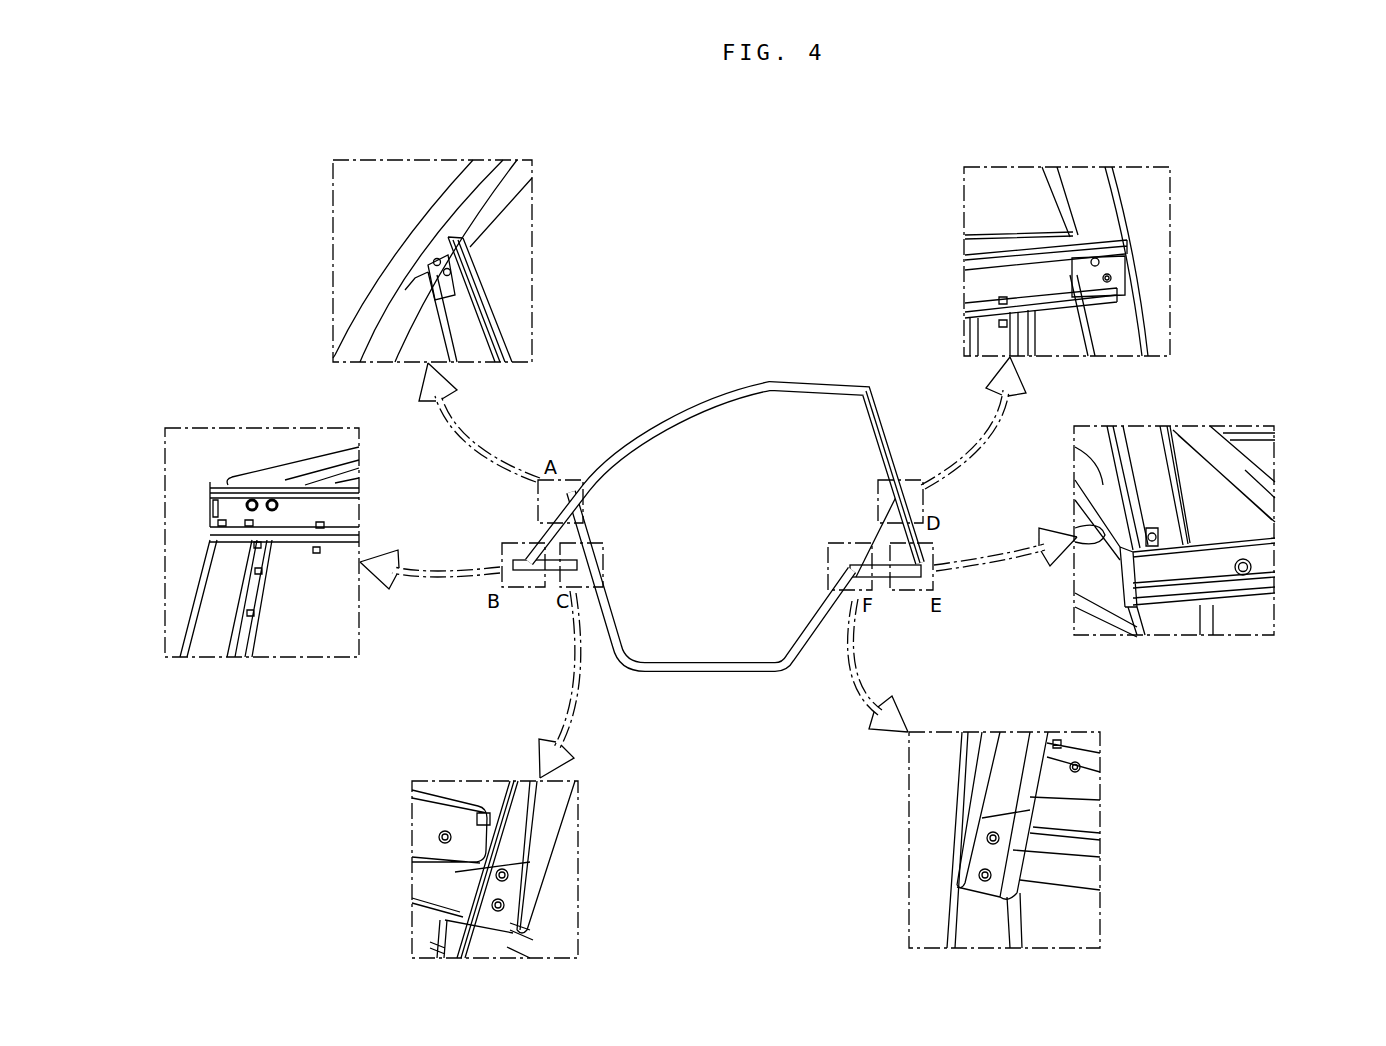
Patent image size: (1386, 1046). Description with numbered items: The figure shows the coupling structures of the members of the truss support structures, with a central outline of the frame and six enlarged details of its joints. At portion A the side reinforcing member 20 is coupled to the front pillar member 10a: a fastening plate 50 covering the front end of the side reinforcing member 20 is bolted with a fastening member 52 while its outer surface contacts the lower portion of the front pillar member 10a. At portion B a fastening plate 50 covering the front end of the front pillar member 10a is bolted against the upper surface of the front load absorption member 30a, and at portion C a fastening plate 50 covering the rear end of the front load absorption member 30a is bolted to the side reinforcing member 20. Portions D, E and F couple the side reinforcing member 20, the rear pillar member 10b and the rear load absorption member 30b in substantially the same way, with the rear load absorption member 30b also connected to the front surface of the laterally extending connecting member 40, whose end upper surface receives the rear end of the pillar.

The front pillar member 10a is at (707, 402).
The rear pillar member 10b is at (877, 437).
The side reinforcing member 20 is at (717, 667).
The front load absorption member 30a is at (552, 572).
The rear load absorption member 30b is at (882, 578).
The connecting member 40 is at (1262, 528).
The fastening plate 50 is at (437, 280).
The fastening member 52 is at (433, 262).